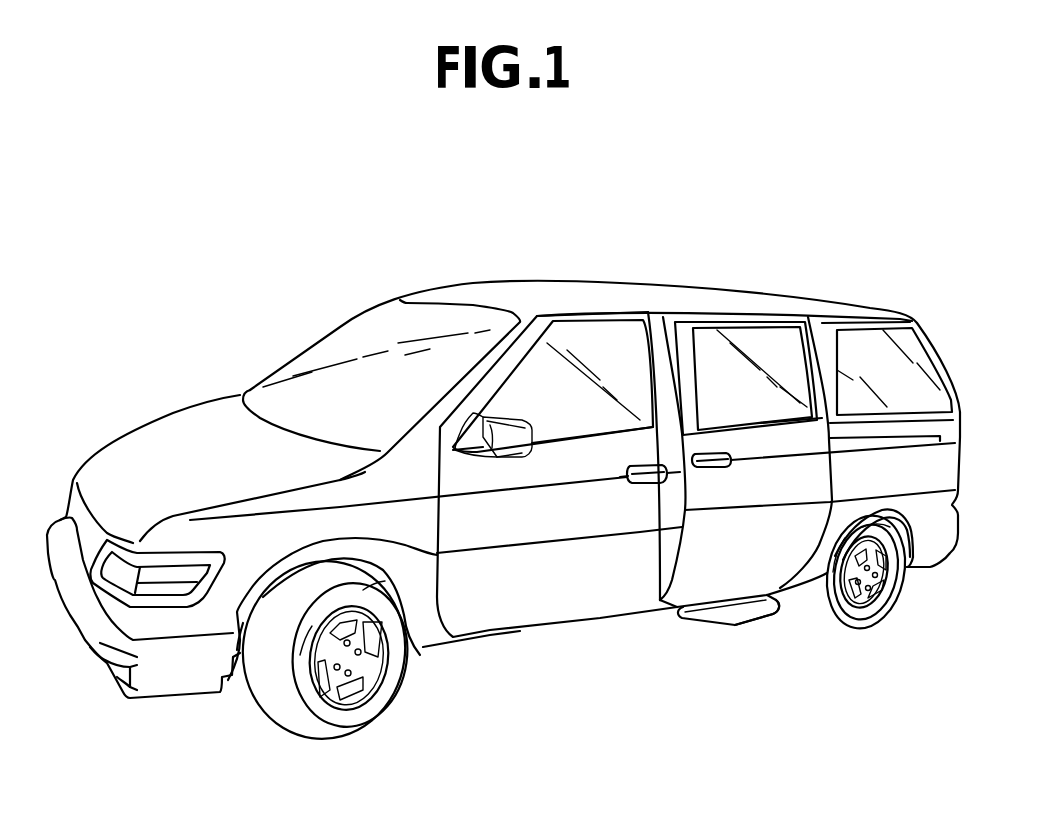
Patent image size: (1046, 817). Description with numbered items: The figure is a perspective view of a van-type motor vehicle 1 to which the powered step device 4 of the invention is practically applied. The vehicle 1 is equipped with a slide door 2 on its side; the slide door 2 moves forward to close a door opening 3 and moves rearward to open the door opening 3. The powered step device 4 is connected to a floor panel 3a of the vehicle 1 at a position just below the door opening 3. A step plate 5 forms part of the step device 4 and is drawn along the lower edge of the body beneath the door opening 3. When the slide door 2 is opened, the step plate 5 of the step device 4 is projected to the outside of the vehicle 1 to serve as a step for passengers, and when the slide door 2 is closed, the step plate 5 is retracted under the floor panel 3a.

The van-type motor vehicle 1 is at (667, 278).
The slide door 2 is at (758, 314).
The door opening 3 is at (658, 331).
The floor panel 3a is at (663, 611).
The powered step device 4 is at (736, 636).
The step plate 5 is at (770, 617).